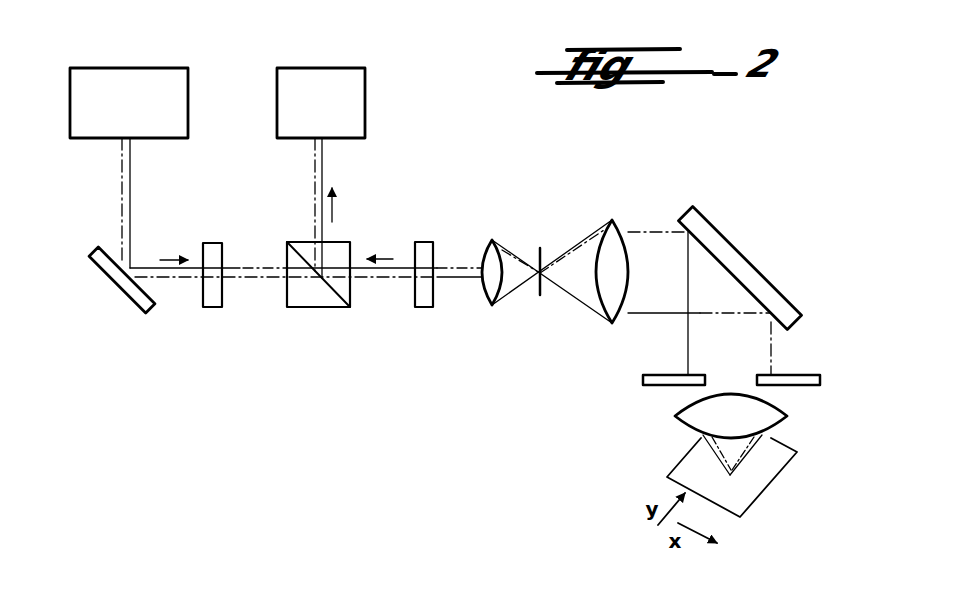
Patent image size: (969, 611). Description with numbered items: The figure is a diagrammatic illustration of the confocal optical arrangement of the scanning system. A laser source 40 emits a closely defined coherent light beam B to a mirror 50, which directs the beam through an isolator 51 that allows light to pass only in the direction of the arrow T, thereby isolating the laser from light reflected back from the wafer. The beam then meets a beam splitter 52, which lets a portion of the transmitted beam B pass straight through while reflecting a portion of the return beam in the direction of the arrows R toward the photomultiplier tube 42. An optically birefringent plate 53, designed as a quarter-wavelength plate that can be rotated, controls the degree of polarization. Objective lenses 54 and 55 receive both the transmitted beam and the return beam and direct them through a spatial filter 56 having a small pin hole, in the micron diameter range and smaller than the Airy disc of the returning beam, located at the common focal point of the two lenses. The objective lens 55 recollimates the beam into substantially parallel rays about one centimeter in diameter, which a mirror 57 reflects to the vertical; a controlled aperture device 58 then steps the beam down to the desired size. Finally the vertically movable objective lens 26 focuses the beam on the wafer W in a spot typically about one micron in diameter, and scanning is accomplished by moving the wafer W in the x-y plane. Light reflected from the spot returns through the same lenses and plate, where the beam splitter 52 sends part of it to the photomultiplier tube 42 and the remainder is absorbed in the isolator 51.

The laser source 40 is at (118, 68).
The photomultiplier tube 42 is at (365, 97).
The light beam B is at (122, 183).
The arrow T is at (167, 257).
The arrows R is at (335, 214).
The mirror 50 is at (123, 300).
The isolator 51 is at (215, 310).
The beam splitter 52 is at (310, 310).
The optically birefringent plate 53 is at (427, 310).
The objective lens 54 is at (488, 242).
The spatial filter 56 is at (545, 255).
The objective lens 55 is at (613, 237).
The mirror 57 is at (752, 262).
The controlled aperture device 58 is at (788, 372).
The objective lens 26 is at (780, 422).
The wafer W is at (780, 475).